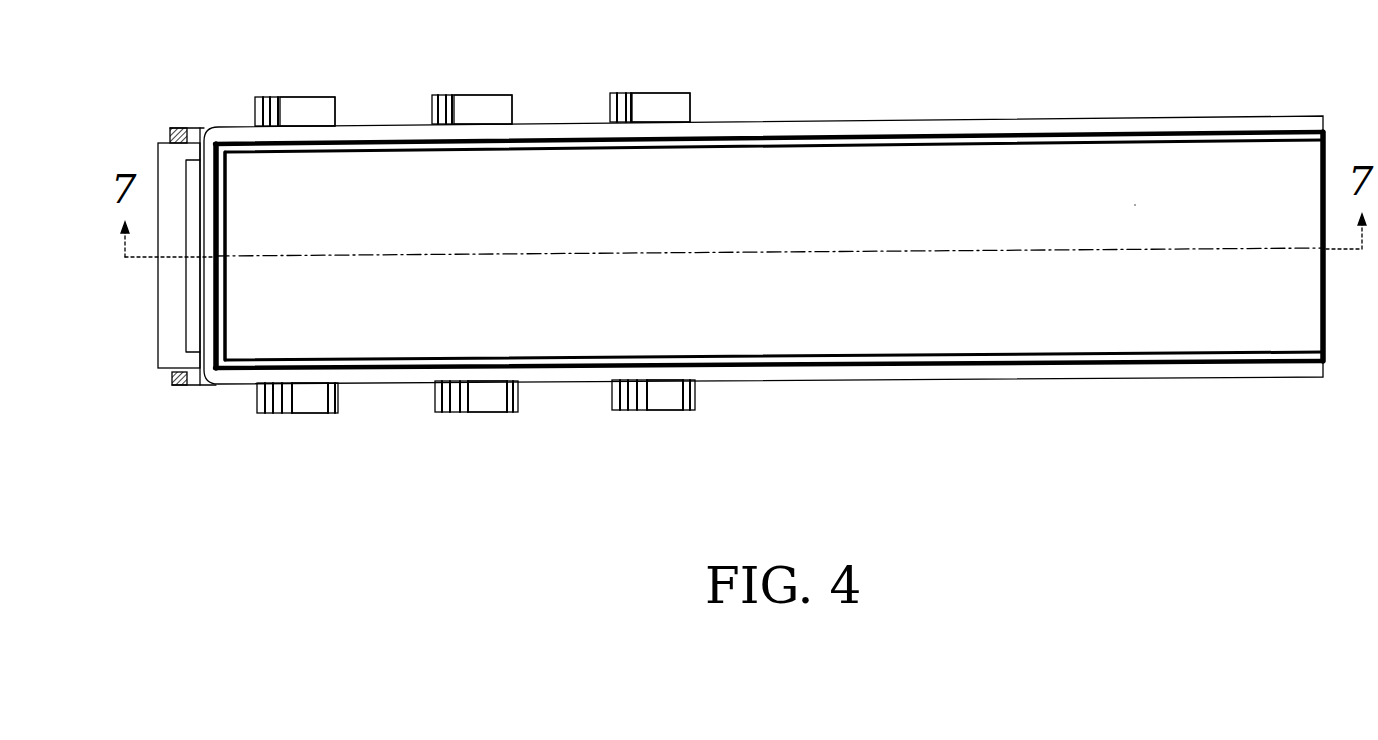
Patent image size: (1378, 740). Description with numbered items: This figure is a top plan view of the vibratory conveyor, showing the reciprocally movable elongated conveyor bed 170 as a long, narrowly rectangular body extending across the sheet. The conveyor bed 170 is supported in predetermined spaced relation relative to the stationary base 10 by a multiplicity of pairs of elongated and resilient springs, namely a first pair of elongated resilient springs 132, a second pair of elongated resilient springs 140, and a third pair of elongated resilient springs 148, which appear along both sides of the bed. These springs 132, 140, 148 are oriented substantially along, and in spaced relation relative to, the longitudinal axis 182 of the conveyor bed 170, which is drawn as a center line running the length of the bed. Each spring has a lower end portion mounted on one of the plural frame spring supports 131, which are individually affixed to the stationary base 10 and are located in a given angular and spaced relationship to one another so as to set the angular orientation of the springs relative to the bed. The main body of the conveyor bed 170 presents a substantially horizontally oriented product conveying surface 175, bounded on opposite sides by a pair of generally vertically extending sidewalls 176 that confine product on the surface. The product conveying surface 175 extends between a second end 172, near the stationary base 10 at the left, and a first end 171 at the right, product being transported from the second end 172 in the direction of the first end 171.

The stationary base 10 is at (160, 333).
The frame spring supports 131 is at (300, 112).
The first pair of elongated resilient springs 132 is at (620, 93).
The second pair of elongated resilient springs 140 is at (440, 95).
The third pair of elongated resilient springs 148 is at (265, 97).
The reciprocally movable elongated conveyor bed 170 is at (885, 110).
The first end 171 is at (1318, 308).
The second end 172 is at (228, 310).
The product conveying surface 175 is at (1136, 206).
The vertically extending sidewalls 176 is at (1110, 116).
The longitudinal axis 182 is at (400, 253).